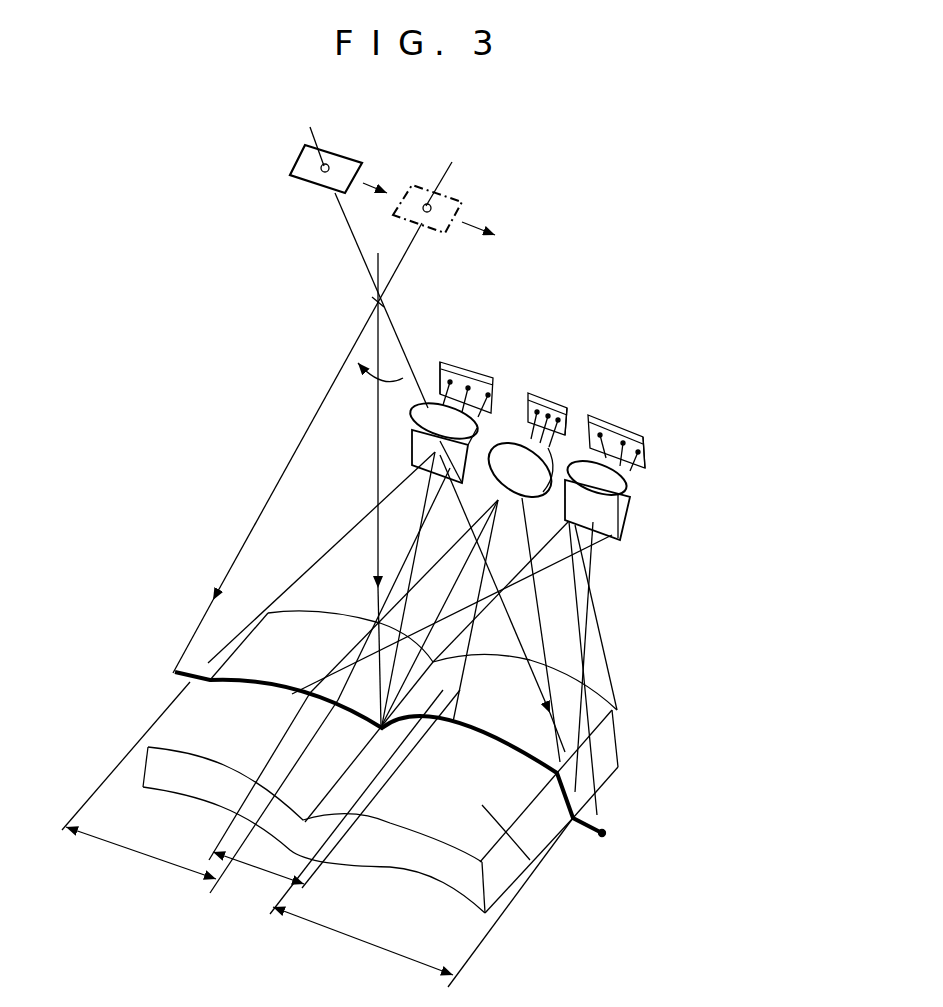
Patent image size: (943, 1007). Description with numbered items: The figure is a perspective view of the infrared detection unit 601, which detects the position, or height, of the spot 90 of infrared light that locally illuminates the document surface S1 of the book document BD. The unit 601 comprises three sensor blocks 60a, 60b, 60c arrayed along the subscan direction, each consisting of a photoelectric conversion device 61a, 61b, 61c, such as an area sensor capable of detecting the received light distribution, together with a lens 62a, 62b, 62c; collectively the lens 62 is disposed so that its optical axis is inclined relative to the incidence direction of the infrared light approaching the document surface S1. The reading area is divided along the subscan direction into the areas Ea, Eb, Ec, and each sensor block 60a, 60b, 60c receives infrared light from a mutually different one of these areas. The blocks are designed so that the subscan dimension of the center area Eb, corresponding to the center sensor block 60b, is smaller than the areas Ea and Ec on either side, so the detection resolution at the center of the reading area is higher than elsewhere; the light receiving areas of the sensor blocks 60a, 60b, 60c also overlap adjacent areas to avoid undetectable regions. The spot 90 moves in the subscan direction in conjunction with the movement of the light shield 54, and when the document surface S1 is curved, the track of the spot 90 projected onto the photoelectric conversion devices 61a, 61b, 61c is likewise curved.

The light shield 54 is at (337, 147).
The infrared detection unit 601 is at (600, 262).
The sensor block 60a is at (473, 358).
The sensor block 60b is at (545, 382).
The sensor block 60c is at (612, 415).
The photoelectric conversion device 61a is at (432, 377).
The photoelectric conversion device 61b is at (560, 394).
The photoelectric conversion device 61c is at (640, 431).
The lens 62a is at (463, 484).
The lens 62b is at (530, 497).
The lens 62c is at (598, 523).
The lens 62 is at (693, 568).
The spot 90 is at (607, 831).
The document surface S1 is at (500, 825).
The book document BD is at (500, 877).
The area Ea is at (141, 853).
The area Eb is at (258, 873).
The area Ec is at (363, 941).